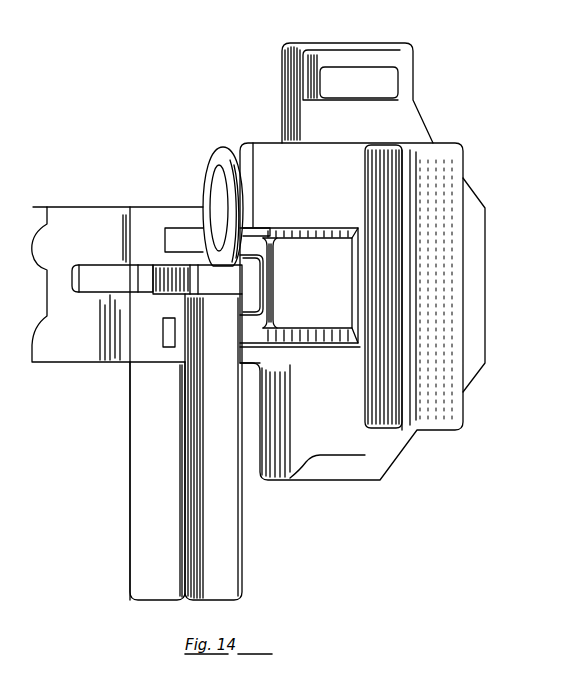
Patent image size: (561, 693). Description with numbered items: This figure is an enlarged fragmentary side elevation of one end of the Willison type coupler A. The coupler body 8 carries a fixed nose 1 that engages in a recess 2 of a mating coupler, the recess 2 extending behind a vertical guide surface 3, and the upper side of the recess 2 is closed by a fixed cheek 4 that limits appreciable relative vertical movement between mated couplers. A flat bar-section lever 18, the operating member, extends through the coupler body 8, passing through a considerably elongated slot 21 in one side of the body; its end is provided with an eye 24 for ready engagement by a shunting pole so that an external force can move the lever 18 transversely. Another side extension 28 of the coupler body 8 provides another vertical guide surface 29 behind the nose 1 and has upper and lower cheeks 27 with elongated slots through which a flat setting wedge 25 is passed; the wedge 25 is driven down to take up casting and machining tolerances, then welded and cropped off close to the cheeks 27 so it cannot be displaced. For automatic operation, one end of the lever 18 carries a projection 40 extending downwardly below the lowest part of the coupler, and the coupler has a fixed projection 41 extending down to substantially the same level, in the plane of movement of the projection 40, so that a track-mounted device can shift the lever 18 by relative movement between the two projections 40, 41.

The fixed nose 1 is at (453, 165).
The recess 2 is at (368, 86).
The vertical guide surface 3 is at (478, 288).
The fixed cheek 4 is at (362, 47).
The coupler body 8 is at (47, 214).
The lever 18 is at (169, 277).
The elongated slot 21 is at (88, 284).
The eye 24 is at (222, 156).
The setting wedge 25 is at (257, 227).
The cheeks 27 is at (280, 237).
The side extension 28 is at (262, 296).
The vertical guide surface 29 is at (325, 249).
The projection 40 is at (205, 561).
The fixed projection 41 is at (140, 486).
The coupler A is at (124, 205).